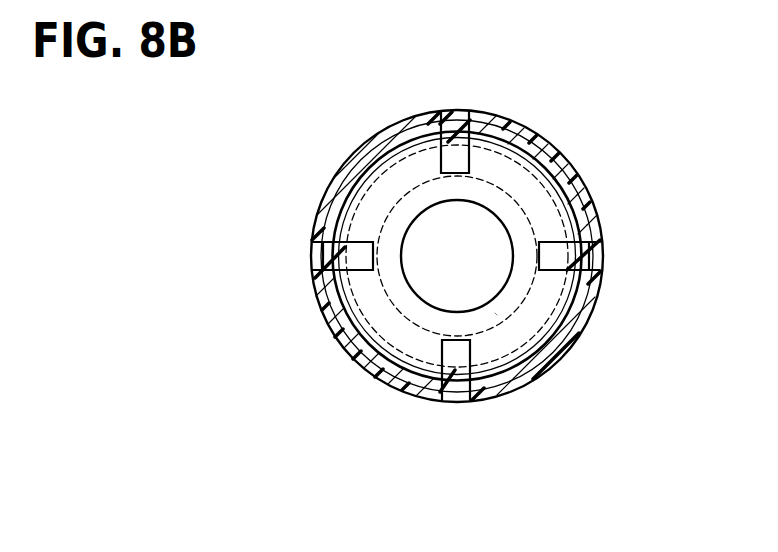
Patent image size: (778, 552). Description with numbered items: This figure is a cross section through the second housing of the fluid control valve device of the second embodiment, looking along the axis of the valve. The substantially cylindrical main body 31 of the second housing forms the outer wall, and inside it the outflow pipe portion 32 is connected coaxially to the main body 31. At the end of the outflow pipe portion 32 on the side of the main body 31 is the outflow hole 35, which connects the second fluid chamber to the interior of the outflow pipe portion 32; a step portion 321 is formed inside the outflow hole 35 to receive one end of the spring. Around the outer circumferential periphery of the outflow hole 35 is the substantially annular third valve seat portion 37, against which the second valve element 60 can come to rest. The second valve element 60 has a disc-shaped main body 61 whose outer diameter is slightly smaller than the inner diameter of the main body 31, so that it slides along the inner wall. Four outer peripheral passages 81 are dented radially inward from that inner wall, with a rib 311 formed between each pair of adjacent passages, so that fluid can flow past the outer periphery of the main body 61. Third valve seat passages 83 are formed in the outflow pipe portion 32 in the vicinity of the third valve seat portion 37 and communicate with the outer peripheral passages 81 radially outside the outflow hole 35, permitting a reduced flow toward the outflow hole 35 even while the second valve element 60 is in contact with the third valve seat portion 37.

The main body 31 is at (540, 135).
The rib 311 is at (440, 118).
The outflow pipe portion 32 is at (518, 133).
The step portion 321 is at (495, 313).
The outflow hole 35 is at (373, 256).
The third valve seat portion 37 is at (456, 165).
The second valve element 60 is at (560, 207).
The main body 61 is at (553, 227).
The outer peripheral passage 81 is at (562, 158).
The third valve seat passage 83 is at (572, 178).